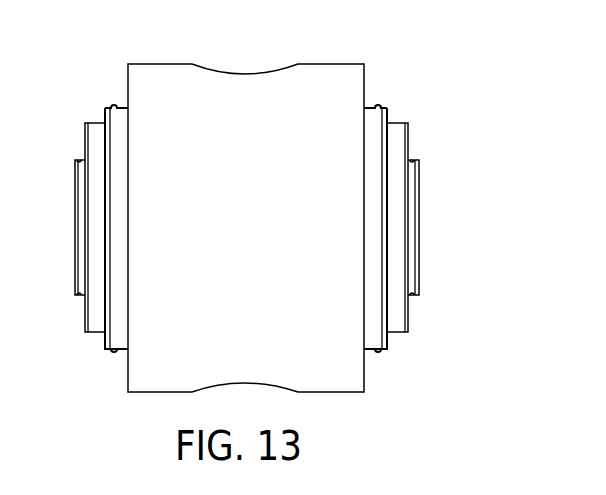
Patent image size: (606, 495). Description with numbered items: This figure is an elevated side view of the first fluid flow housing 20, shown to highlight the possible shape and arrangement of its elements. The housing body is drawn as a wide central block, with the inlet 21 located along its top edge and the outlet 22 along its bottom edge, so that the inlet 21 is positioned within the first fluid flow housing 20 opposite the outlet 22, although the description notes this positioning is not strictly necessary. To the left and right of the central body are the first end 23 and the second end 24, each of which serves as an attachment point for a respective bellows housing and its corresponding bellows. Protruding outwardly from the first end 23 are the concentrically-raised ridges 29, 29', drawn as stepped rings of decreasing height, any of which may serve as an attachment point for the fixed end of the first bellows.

The first fluid flow housing 20 is at (368, 53).
The inlet 21 is at (248, 73).
The outlet 22 is at (250, 384).
The first end 23 is at (98, 132).
The second end 24 is at (407, 182).
The concentrically-raised ridge 29 is at (91, 244).
The concentrically-raised ridge 29' is at (64, 229).